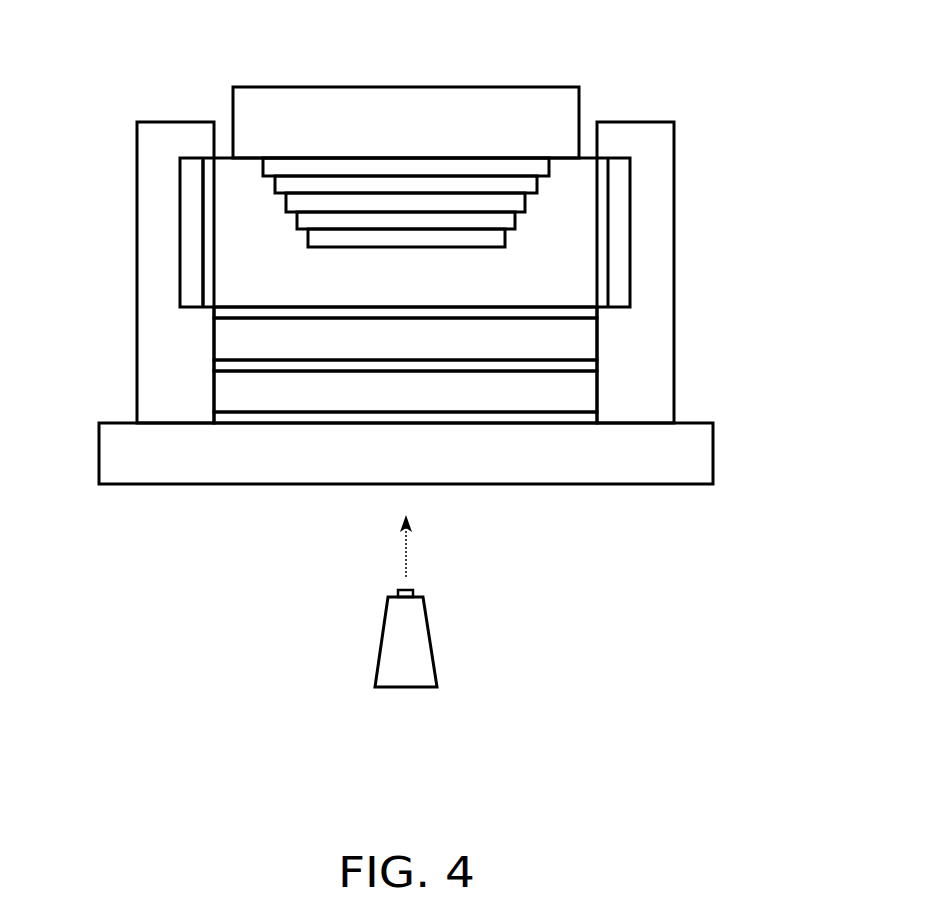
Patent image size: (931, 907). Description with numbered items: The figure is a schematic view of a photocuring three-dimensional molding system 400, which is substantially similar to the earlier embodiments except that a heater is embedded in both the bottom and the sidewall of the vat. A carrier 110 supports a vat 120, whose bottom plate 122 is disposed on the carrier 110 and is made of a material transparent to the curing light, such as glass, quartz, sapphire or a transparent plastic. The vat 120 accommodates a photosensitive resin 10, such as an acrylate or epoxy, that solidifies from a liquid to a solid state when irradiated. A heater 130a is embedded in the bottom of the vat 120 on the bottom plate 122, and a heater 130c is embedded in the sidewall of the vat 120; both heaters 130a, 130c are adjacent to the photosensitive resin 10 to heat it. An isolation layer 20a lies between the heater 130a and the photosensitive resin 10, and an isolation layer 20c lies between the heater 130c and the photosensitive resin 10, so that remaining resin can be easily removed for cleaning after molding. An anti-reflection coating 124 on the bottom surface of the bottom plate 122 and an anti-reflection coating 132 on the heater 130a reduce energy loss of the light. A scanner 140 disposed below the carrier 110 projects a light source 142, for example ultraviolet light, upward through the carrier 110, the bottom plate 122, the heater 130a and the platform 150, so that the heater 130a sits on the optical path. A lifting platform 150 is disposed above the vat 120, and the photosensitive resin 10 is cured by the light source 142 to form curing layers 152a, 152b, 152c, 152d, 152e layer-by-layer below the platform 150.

The photocuring three-dimensional molding system 400 is at (88, 80).
The carrier 110 is at (703, 453).
The vat 120 is at (137, 282).
The bottom plate 122 is at (585, 390).
The anti-reflection coating 124 is at (233, 417).
The anti-reflection coating 132 is at (233, 365).
The heater 130a is at (585, 340).
The heater 130c is at (187, 207).
The isolation layer 20a is at (233, 313).
The isolation layer 20c is at (205, 245).
The photosensitive resin 10 is at (585, 278).
The platform 150 is at (572, 133).
The curing layer 152a is at (537, 165).
The curing layer 152b is at (528, 185).
The curing layer 152c is at (518, 203).
The curing layer 152d is at (512, 220).
The curing layer 152e is at (493, 237).
The scanner 140 is at (422, 642).
The light source 142 is at (407, 550).